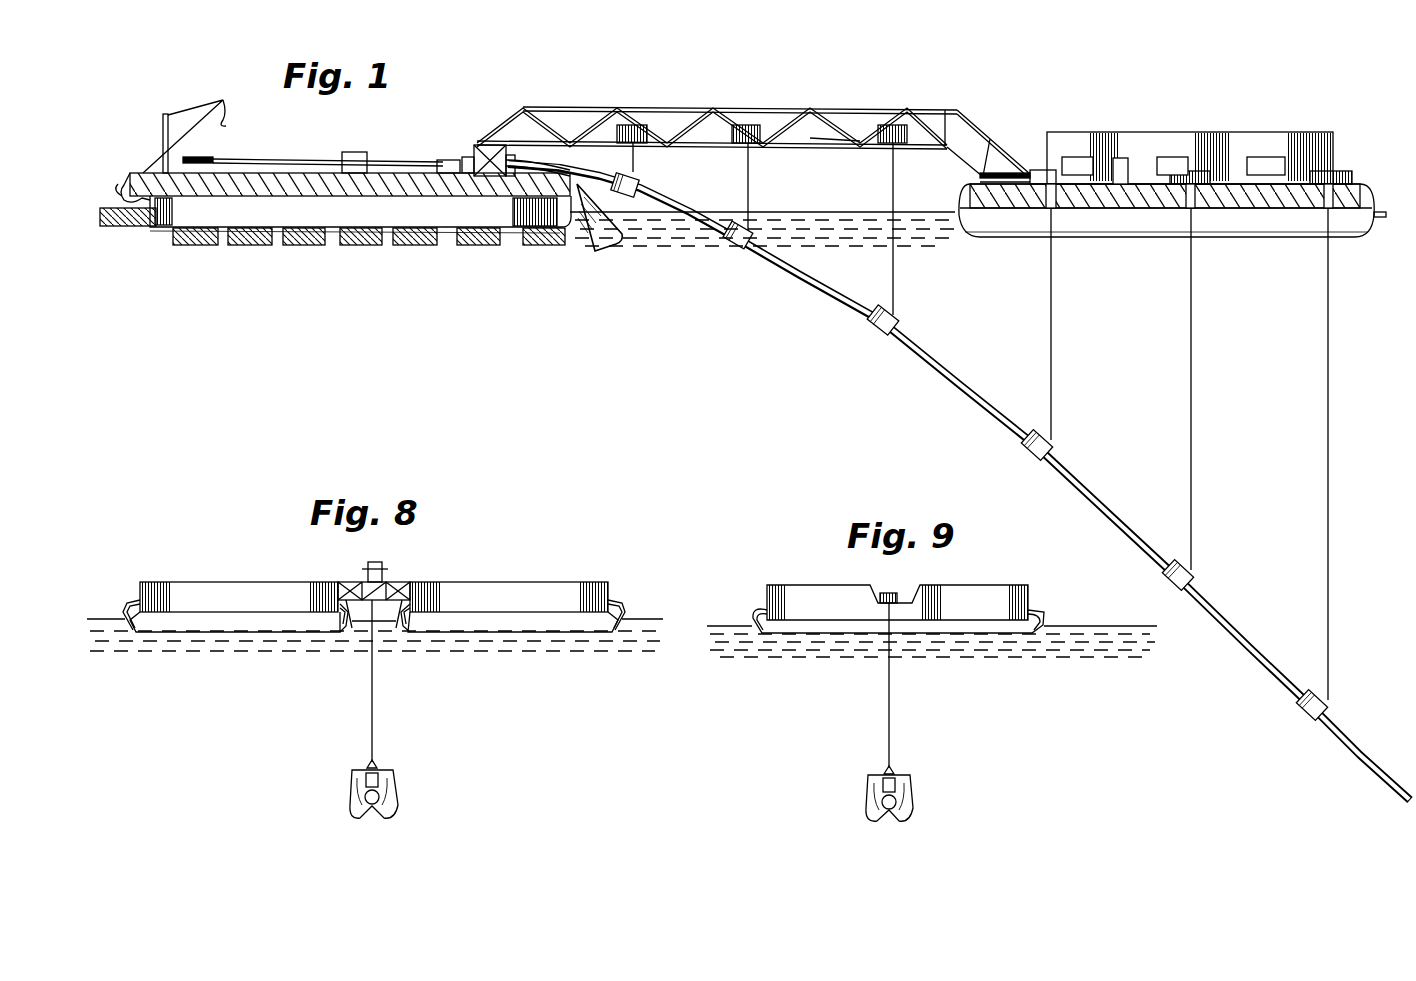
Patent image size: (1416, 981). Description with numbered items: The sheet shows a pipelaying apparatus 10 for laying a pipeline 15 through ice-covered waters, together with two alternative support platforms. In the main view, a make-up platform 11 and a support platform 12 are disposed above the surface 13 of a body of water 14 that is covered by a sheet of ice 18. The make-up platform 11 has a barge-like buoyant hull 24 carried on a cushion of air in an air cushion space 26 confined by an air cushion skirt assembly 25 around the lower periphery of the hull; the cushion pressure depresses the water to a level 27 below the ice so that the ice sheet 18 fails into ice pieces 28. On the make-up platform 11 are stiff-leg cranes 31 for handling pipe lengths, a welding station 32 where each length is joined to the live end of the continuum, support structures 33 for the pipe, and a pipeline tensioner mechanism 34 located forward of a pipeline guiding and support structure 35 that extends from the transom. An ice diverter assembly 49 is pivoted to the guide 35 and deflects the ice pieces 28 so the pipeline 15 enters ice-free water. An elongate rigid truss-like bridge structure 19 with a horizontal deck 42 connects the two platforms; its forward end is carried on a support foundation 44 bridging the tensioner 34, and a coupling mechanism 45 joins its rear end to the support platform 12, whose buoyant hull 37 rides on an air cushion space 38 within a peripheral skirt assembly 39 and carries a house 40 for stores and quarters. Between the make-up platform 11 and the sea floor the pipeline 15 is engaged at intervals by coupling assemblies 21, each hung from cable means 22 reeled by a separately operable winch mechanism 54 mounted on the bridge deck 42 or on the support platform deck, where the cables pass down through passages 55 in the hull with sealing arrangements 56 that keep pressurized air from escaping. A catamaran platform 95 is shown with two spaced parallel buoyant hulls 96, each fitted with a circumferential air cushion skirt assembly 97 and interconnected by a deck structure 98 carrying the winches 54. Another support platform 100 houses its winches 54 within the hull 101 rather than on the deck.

In FIG. 1, the pipelaying apparatus 10 is at (699, 90).
In FIG. 1, the make-up platform 11 is at (392, 158).
In FIG. 1, the support platform 12 is at (1259, 130).
In FIG. 1, the water surface 13 is at (835, 212).
In FIG. 8, the water surface 13 is at (645, 622).
In FIG. 9, the water surface 13 is at (1092, 630).
In FIG. 1, the body of water 14 is at (646, 313).
In FIG. 1, the pipeline 15 is at (950, 384).
In FIG. 8, the pipeline 15 is at (372, 808).
In FIG. 1, the ice sheet 18 is at (118, 226).
In FIG. 1, the bridge structure 19 is at (745, 105).
In FIG. 1, the coupling assembly 21 is at (734, 252).
In FIG. 8, the coupling assembly 21 is at (400, 777).
In FIG. 9, the coupling assembly 21 is at (917, 788).
In FIG. 1, the cable means 22 is at (1186, 328).
In FIG. 8, the cable means 22 is at (374, 716).
In FIG. 9, the cable means 22 is at (891, 716).
In FIG. 1, the buoyant hull 24 is at (287, 196).
In FIG. 1, the air cushion skirt assembly 25 is at (124, 184).
In FIG. 1, the air cushion space 26 is at (331, 225).
In FIG. 1, the depressed water level 27 is at (447, 246).
In FIG. 1, the ice pieces 28 is at (360, 246).
In FIG. 1, the stiff-leg crane 31 is at (205, 106).
In FIG. 1, the welding station 32 is at (352, 152).
In FIG. 1, the support structure 33 is at (286, 160).
In FIG. 1, the pipeline tensioner mechanism 34 is at (468, 157).
In FIG. 1, the pipeline guiding and support structure 35 is at (592, 172).
In FIG. 1, the buoyant hull 37 is at (1263, 210).
In FIG. 1, the air cushion space 38 is at (1164, 228).
In FIG. 1, the peripheral skirt assembly 39 is at (1382, 213).
In FIG. 1, the house 40 is at (1134, 133).
In FIG. 1, the horizontal deck 42 is at (812, 137).
In FIG. 1, the support foundation 44 is at (490, 145).
In FIG. 1, the coupling mechanism 45 is at (978, 177).
In FIG. 1, the ice diverter assembly 49 is at (613, 246).
In FIG. 1, the winch mechanism 54 is at (636, 125).
In FIG. 8, the winch mechanism 54 is at (385, 568).
In FIG. 9, the winch mechanism 54 is at (896, 593).
In FIG. 1, the passage 55 is at (1049, 232).
In FIG. 1, the sealing arrangement 56 is at (1052, 184).
In FIG. 8, the catamaran platform 95 is at (370, 580).
In FIG. 8, the hull 96 is at (175, 590).
In FIG. 8, the circumferential air cushion skirt assembly 97 is at (125, 605).
In FIG. 8, the deck structure 98 is at (348, 582).
In FIG. 9, the support platform 100 is at (898, 589).
In FIG. 9, the hull 101 is at (812, 595).